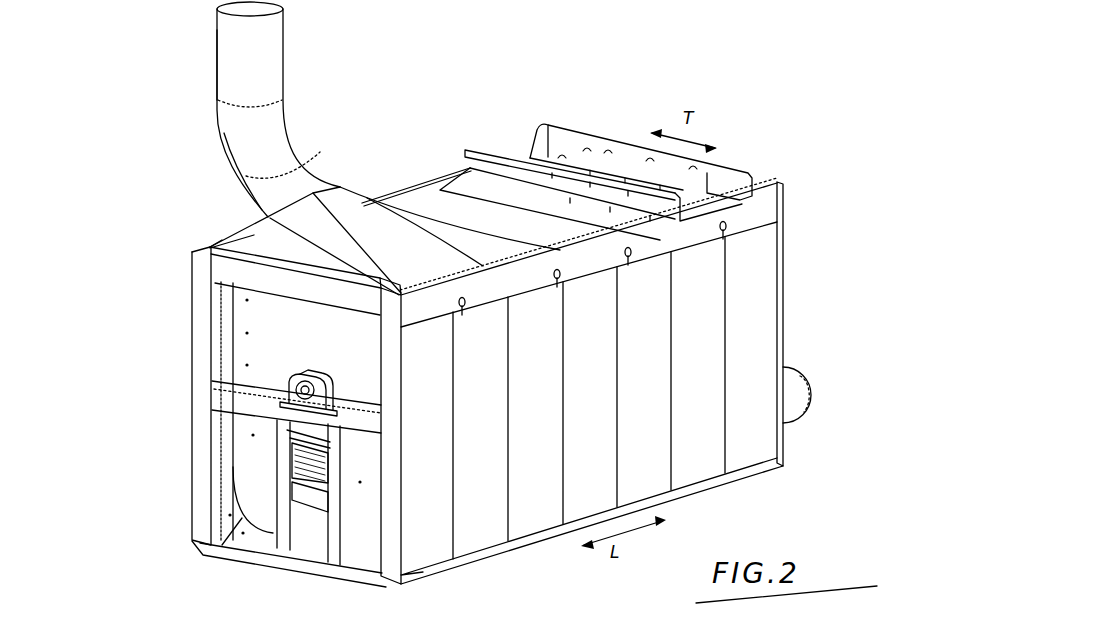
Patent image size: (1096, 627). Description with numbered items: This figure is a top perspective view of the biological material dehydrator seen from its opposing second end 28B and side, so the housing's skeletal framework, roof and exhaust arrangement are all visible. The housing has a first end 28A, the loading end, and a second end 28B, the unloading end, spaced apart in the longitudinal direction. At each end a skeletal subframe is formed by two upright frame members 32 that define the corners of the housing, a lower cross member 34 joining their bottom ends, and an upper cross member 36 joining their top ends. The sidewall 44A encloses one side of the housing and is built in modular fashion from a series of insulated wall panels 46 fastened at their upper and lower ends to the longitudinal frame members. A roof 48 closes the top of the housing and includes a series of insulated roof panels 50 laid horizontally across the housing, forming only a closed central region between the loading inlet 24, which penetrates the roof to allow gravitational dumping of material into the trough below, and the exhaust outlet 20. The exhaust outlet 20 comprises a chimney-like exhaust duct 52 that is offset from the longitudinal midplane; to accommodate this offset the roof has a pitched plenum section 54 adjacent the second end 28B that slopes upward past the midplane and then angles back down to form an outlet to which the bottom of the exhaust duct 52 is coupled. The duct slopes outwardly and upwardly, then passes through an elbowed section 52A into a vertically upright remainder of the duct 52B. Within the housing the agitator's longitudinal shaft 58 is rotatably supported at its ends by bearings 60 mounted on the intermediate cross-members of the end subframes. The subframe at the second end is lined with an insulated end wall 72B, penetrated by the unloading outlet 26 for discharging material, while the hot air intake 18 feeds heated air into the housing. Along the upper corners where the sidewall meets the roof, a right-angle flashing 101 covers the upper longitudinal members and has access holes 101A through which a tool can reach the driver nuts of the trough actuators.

The hot air intake 18 is at (800, 393).
The exhaust outlet 20 is at (338, 160).
The loading inlet 24 is at (630, 160).
The unloading outlet 26 is at (292, 466).
The first end 28A is at (838, 220).
The second end 28B is at (125, 386).
The upright frame members 32 is at (200, 316).
The lower cross member 34 is at (296, 562).
The upper cross member 36 is at (210, 283).
The sidewall 44A is at (763, 330).
The insulated wall panels 46 is at (648, 485).
The roof 48 is at (502, 195).
The insulated roof panels 50 is at (487, 199).
The exhaust duct 52 is at (272, 66).
The elbowed section 52A is at (232, 132).
The vertically upright remainder of the duct 52B is at (237, 47).
The pitched plenum section 54 is at (366, 213).
The longitudinal shaft 58 is at (220, 398).
The bearings 60 is at (330, 394).
The insulated end wall 72B is at (270, 345).
The right-angle flashing 101 is at (766, 208).
The access holes 101A is at (459, 308).